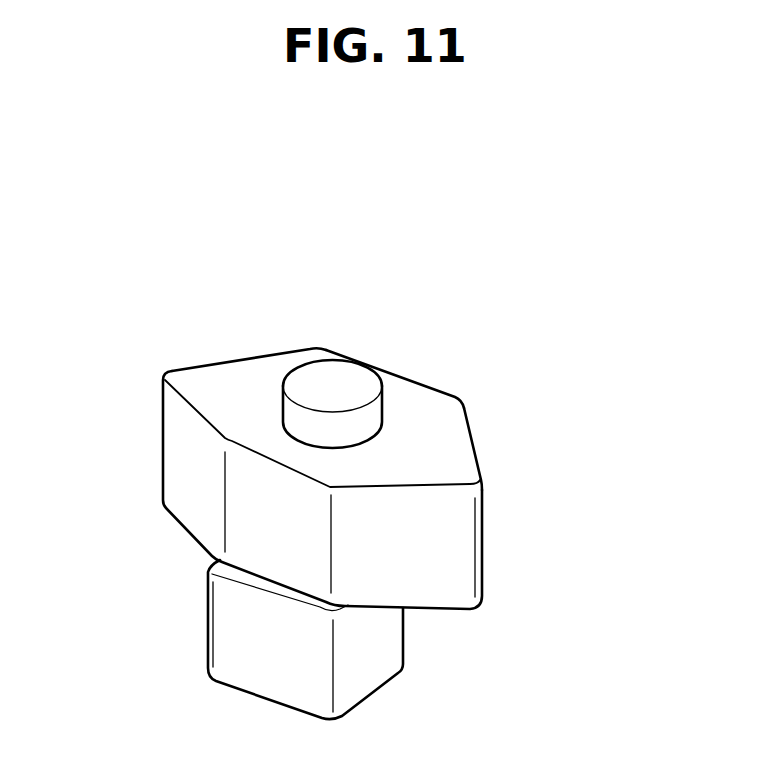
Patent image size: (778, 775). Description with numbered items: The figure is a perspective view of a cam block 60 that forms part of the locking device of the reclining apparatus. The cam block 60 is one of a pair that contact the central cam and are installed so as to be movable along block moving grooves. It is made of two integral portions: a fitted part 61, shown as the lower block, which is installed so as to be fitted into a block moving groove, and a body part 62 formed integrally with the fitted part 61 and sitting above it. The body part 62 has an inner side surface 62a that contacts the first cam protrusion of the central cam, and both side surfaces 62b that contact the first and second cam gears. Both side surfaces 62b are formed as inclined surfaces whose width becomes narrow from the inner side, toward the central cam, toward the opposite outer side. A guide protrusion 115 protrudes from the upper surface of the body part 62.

The cam block 60 is at (370, 332).
The body part 62 is at (427, 402).
The inner side surface 62a is at (277, 518).
The both side surfaces 62b is at (213, 363).
The guide protrusion 115 is at (330, 382).
The fitted part 61 is at (253, 651).